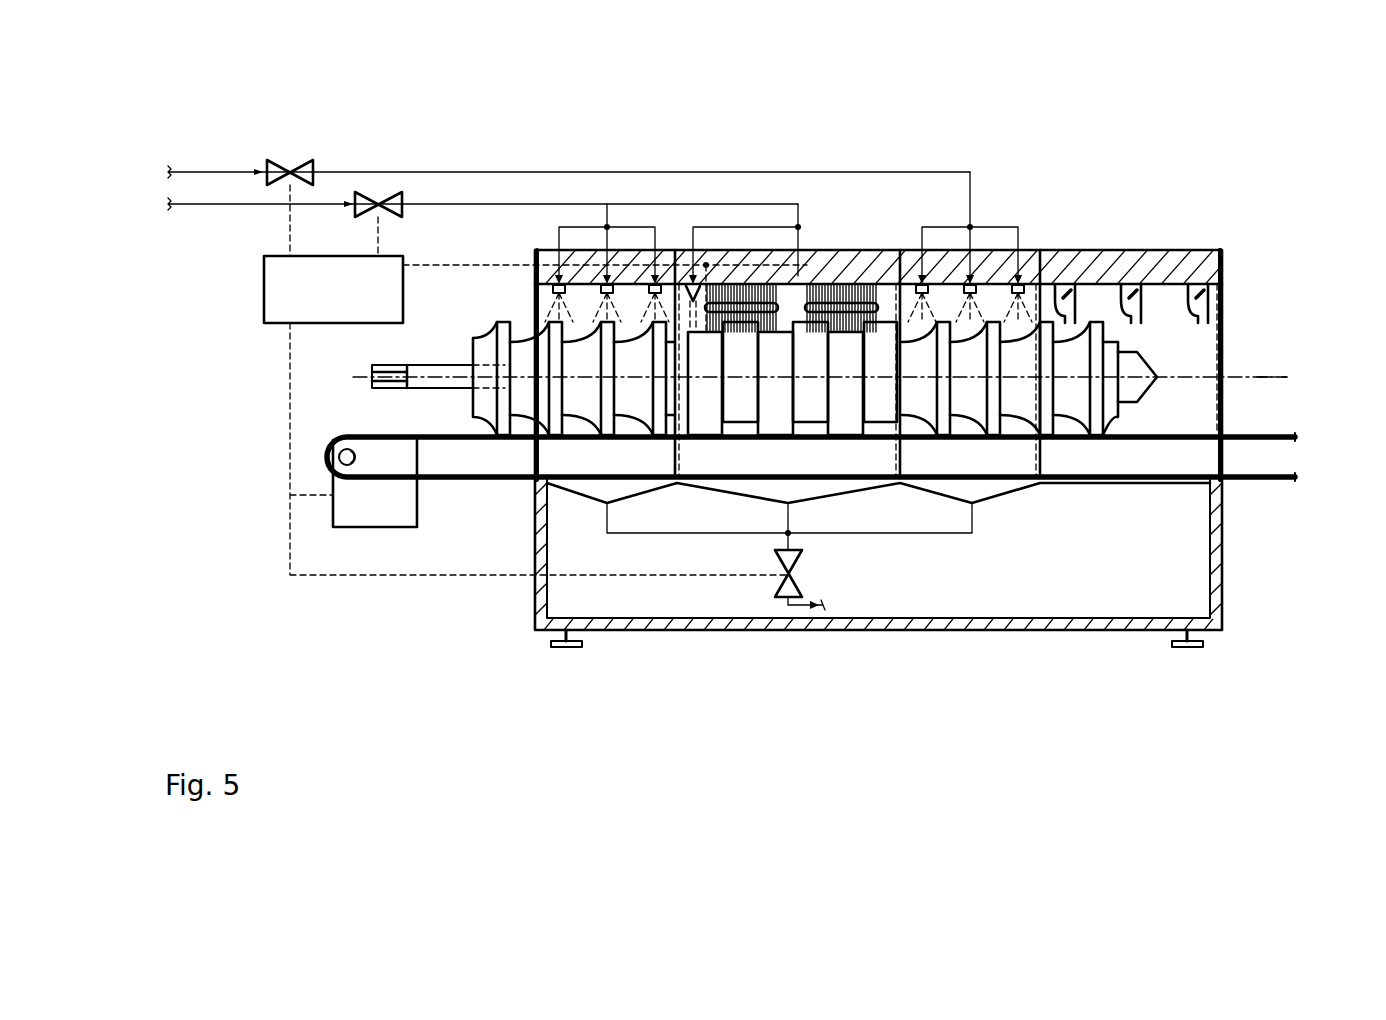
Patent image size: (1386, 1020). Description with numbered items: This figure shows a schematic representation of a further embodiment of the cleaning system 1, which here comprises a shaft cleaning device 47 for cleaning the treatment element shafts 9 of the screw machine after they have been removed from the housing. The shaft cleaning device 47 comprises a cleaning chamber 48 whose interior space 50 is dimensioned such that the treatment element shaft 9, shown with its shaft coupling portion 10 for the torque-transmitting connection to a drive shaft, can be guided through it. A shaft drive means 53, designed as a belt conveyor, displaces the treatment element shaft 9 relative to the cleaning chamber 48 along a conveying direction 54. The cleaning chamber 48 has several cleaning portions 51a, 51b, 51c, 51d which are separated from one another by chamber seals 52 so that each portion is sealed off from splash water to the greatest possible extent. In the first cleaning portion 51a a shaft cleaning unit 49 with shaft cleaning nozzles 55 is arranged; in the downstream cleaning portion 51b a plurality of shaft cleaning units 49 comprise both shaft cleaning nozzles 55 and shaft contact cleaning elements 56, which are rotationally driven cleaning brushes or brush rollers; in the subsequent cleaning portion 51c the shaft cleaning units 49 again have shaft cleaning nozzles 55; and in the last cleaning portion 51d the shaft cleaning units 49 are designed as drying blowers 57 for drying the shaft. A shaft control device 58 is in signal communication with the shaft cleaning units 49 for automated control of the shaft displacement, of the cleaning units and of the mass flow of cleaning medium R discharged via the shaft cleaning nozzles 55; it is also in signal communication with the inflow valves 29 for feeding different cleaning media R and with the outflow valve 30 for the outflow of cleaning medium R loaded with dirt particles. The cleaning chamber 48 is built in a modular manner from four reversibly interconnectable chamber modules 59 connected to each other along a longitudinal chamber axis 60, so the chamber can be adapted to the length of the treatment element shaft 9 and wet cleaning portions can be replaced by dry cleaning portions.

The cleaning system 1 is at (718, 150).
The treatment element shaft 9 is at (433, 365).
The shaft coupling portion 10 is at (355, 374).
The inflow valve 29 is at (363, 190).
The outflow valve 30 is at (787, 560).
The shaft cleaning device 47 is at (1140, 236).
The cleaning chamber 48 is at (1223, 267).
The shaft cleaning unit 49 is at (915, 270).
The interior space 50 is at (1195, 337).
The first cleaning portion 51a is at (574, 543).
The cleaning portion 51b is at (742, 440).
The cleaning portion 51c is at (970, 440).
The last cleaning portion 51d is at (1123, 440).
The chamber seal 52 is at (1018, 278).
The shaft drive means 53 is at (385, 513).
The conveying direction 54 is at (1240, 497).
The shaft cleaning nozzle 55 is at (692, 278).
The shaft contact cleaning element 56 is at (847, 287).
The drying blower 57 is at (1125, 285).
The shaft control device 58 is at (280, 295).
The chamber module 59 is at (570, 440).
The longitudinal chamber axis 60 is at (1207, 377).
The cleaning medium R is at (690, 320).